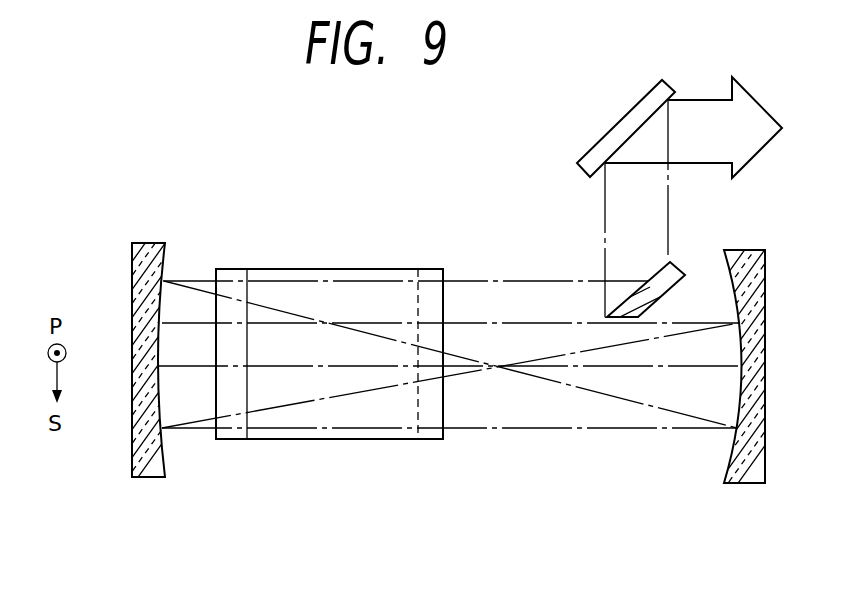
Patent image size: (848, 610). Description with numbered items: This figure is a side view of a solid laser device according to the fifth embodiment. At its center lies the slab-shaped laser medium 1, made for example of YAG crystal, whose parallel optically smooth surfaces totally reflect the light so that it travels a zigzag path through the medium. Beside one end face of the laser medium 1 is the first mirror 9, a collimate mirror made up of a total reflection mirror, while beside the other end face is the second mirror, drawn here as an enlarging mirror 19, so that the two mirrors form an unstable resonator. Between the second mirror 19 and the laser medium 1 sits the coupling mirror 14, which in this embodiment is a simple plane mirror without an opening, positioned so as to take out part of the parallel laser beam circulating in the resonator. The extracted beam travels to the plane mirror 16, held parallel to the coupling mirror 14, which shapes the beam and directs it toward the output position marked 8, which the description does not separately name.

The slab-shaped laser medium 1 is at (352, 268).
The output beam direction 8 is at (757, 101).
The first mirror 9 is at (157, 243).
The coupling mirror 14 is at (652, 275).
The plane mirror 16 is at (628, 108).
The enlarging convex mirror 19 is at (756, 484).